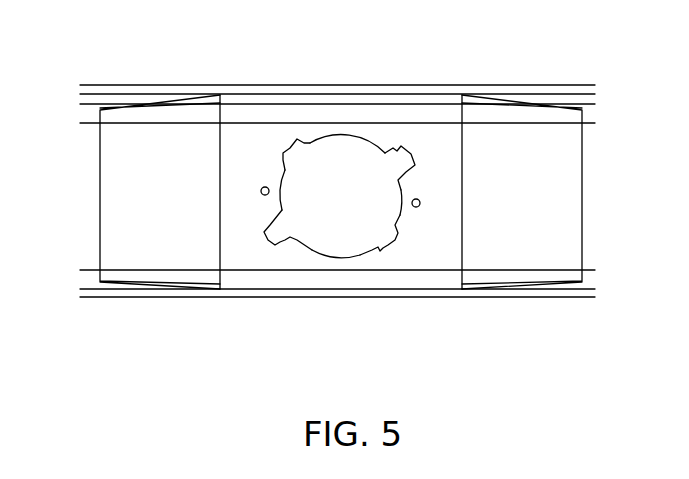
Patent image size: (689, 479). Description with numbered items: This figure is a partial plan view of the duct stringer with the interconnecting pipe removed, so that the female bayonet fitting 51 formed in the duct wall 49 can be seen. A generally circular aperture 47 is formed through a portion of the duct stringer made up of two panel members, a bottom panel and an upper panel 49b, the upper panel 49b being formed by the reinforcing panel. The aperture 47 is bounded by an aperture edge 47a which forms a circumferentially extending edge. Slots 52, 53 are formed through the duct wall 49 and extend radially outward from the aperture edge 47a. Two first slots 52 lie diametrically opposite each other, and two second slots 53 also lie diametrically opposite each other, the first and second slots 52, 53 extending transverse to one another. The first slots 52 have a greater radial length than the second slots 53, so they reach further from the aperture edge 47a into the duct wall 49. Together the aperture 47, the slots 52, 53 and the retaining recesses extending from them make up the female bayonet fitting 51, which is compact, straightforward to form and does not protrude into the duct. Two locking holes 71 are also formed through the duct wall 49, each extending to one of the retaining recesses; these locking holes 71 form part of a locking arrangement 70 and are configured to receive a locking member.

The aperture 47 is at (329, 252).
The aperture edge 47a is at (341, 136).
The duct wall 49 is at (497, 253).
The upper panel 49b is at (152, 252).
The female bayonet fitting 51 is at (210, 323).
The first slot 52 is at (400, 148).
The second slot 53 is at (294, 146).
The locking arrangement 70 is at (430, 144).
The locking hole 71 is at (421, 201).